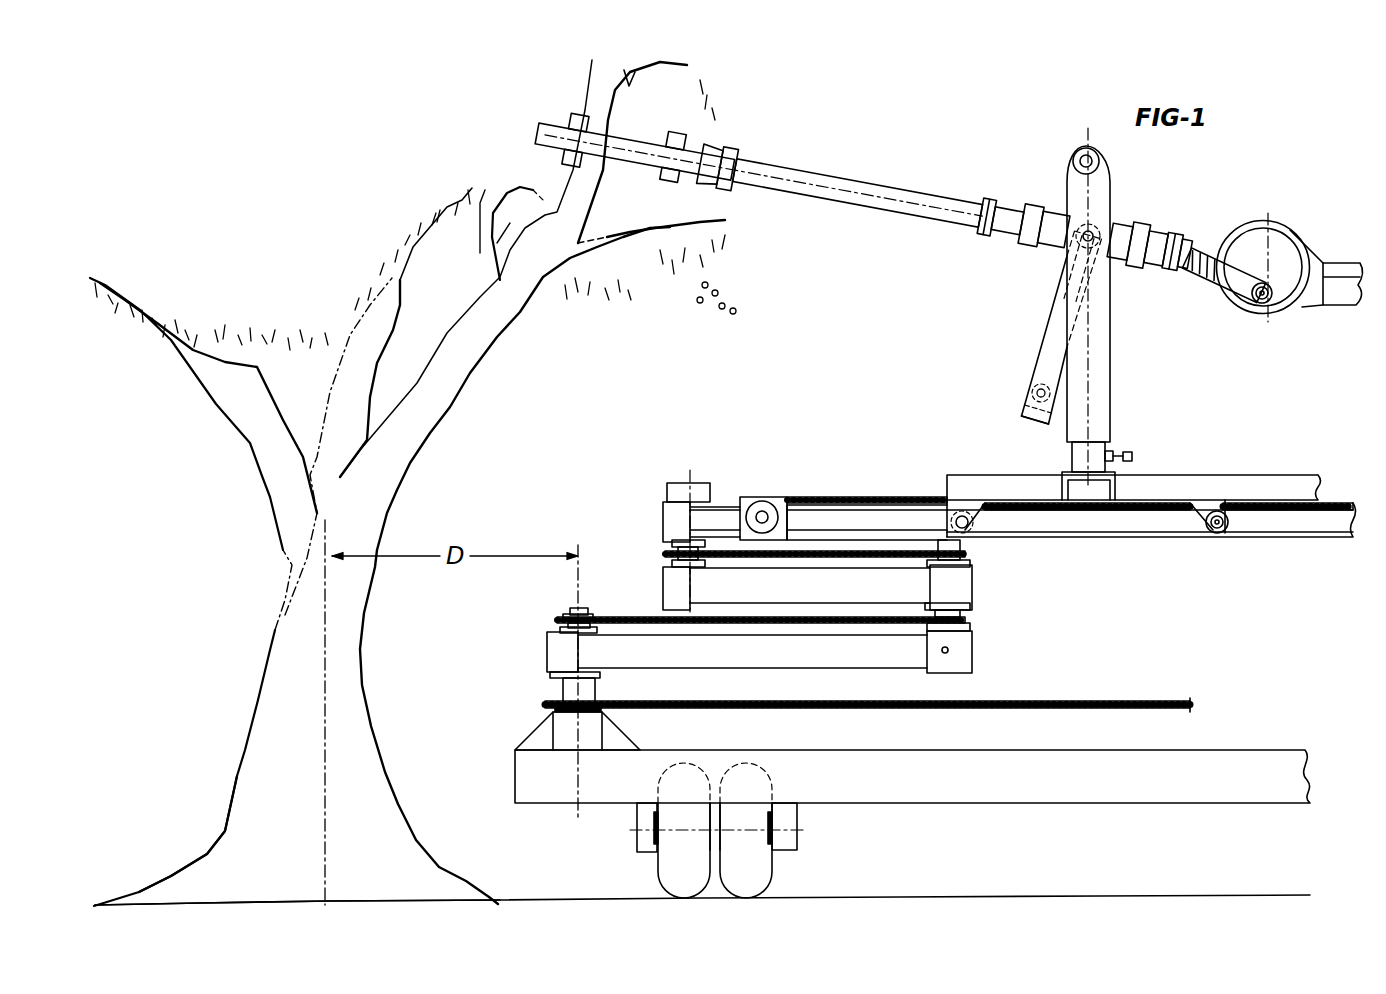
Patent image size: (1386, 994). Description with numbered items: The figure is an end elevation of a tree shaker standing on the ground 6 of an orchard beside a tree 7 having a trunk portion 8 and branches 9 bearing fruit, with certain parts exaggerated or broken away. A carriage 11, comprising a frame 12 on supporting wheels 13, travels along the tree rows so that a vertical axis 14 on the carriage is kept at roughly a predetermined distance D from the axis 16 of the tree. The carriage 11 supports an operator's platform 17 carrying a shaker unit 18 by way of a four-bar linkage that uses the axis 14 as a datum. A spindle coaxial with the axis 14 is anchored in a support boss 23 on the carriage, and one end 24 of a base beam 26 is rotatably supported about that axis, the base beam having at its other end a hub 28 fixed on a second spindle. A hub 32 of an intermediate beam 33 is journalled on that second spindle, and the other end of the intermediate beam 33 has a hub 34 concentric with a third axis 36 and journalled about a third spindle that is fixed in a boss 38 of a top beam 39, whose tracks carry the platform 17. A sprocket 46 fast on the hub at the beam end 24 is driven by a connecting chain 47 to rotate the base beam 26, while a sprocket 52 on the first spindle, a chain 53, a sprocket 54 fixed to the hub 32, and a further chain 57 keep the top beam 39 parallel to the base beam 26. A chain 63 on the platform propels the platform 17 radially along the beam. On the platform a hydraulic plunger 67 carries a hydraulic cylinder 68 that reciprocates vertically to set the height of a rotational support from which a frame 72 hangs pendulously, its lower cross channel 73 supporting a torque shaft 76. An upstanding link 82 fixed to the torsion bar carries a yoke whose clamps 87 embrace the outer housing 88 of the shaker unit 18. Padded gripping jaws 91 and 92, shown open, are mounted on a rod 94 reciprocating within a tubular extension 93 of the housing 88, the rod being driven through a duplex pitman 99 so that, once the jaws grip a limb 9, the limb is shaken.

The ground 6 is at (527, 878).
The tree 7 is at (365, 696).
The trunk portion 8 is at (239, 779).
The branches 9 is at (395, 300).
The carriage 11 is at (978, 805).
The frame 12 is at (985, 750).
The supporting wheels 13 is at (667, 863).
The vertical axis 14 is at (578, 603).
The axis of tree 16 is at (327, 625).
The operator's platform 17 is at (1195, 472).
The shaker unit 18 is at (843, 152).
The support boss 23 is at (593, 740).
The end of base beam 24 is at (547, 648).
The base beam 26 is at (783, 657).
The hub 28 is at (965, 658).
The hub 32 is at (967, 600).
The intermediate beam 33 is at (903, 588).
The hub 34 is at (665, 577).
The third axis 36 is at (688, 496).
The boss 38 is at (665, 518).
The top beam 39 is at (1081, 534).
The sprocket 46 is at (567, 698).
The connecting chain 47 is at (1083, 702).
The sprocket 52 is at (560, 615).
The chain 53 is at (633, 617).
The sprocket 54 is at (968, 614).
The chain 57 is at (826, 558).
The chain 63 is at (877, 474).
The hydraulic plunger 67 is at (1074, 457).
The hydraulic cylinder 68 is at (1104, 369).
The frame 72 is at (1041, 330).
The cross channel 73 is at (1030, 418).
The torque shaft 76 is at (1031, 393).
The upstanding link 82 is at (1050, 307).
The clamps 87 is at (1035, 212).
The outer housing 88 is at (1218, 288).
The padded gripping jaw 91 is at (580, 114).
The padded gripping jaw 92 is at (628, 131).
The tubular extension 93 is at (1008, 232).
The rod 94 is at (867, 203).
The duplex pitman 99 is at (1230, 260).